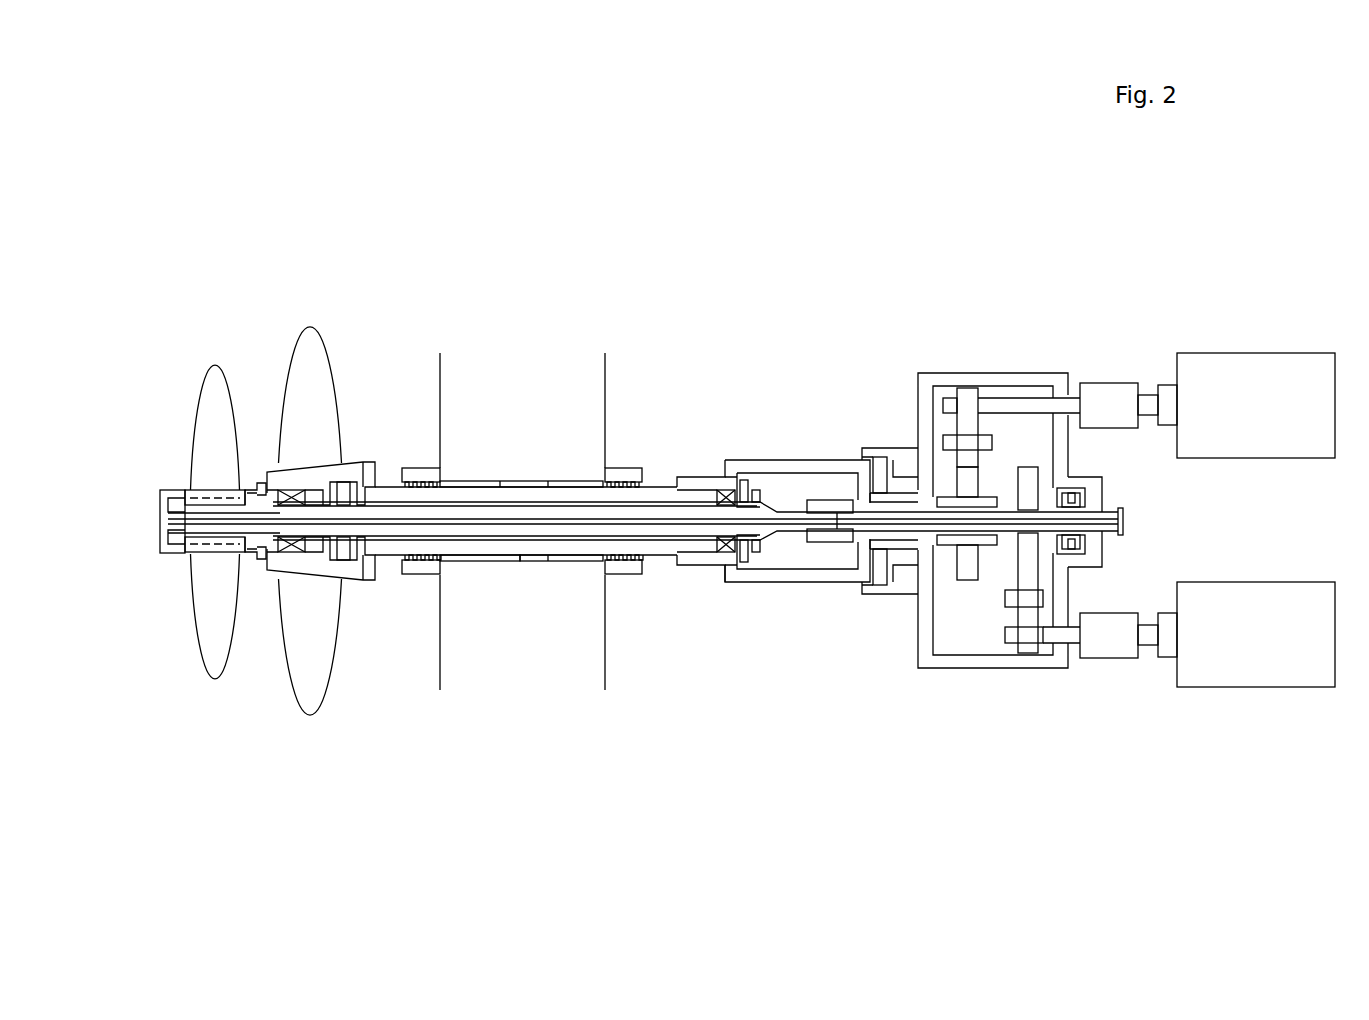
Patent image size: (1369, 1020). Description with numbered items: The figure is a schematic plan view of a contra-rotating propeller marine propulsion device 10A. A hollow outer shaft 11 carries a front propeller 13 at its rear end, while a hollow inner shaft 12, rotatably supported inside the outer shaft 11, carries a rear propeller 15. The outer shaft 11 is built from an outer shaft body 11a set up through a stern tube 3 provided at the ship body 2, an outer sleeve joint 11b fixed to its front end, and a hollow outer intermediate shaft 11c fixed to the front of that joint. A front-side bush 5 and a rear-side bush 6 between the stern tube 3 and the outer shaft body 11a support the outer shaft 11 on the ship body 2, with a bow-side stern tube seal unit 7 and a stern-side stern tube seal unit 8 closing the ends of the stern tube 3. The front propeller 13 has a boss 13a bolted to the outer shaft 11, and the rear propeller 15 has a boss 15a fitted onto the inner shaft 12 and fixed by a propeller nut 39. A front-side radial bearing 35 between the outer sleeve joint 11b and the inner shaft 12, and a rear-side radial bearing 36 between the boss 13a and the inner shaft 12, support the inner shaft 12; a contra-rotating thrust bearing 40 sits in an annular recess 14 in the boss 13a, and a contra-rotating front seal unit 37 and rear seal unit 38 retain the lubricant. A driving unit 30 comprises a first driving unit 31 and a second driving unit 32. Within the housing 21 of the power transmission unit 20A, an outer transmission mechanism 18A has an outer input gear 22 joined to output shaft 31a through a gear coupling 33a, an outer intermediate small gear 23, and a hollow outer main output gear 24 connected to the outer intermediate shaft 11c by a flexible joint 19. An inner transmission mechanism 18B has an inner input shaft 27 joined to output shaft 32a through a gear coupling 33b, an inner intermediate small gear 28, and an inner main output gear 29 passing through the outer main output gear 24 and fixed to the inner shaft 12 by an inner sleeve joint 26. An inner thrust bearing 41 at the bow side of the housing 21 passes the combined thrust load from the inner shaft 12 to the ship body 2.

The ship body 2 is at (605, 407).
The stern tube 3 is at (530, 481).
The front-side bush 5 is at (563, 558).
The rear-side bush 6 is at (478, 558).
The bow-side stern tube seal unit 7 is at (625, 468).
The stern-side stern tube seal unit 8 is at (420, 468).
The contra-rotating propeller marine propulsion device 10A is at (690, 272).
The outer shaft 11 is at (798, 382).
The outer shaft body 11a is at (657, 495).
The outer sleeve joint 11b is at (700, 480).
The outer intermediate shaft 11c is at (755, 460).
The inner shaft 12 is at (645, 525).
The front propeller 13 is at (327, 340).
The boss 13a is at (347, 463).
The annular recess 14 is at (362, 553).
The rear propeller 15 is at (207, 365).
The boss 15a is at (190, 488).
The outer transmission mechanism 18A is at (934, 414).
The inner transmission mechanism 18B is at (978, 614).
The flexible joint 19 is at (908, 472).
The power transmission unit 20A is at (962, 363).
The housing 21 is at (995, 378).
The outer input gear 22 is at (960, 397).
The outer intermediate small gear 23 is at (972, 457).
The outer main output gear 24 is at (957, 573).
The inner sleeve joint 26 is at (817, 540).
The inner input shaft 27 is at (1023, 645).
The inner intermediate small gear 28 is at (1022, 608).
The inner main output gear 29 is at (1023, 550).
The driving unit 30 is at (1245, 315).
The first driving unit 31 is at (1267, 360).
The output shaft 31a is at (1150, 397).
The second driving unit 32 is at (1268, 598).
The output shaft 32a is at (1145, 628).
The gear coupling 33a is at (1095, 390).
The gear coupling 33b is at (1095, 620).
The front-side radial bearing 35 is at (727, 557).
The rear-side radial bearing 36 is at (282, 488).
The contra-rotating front seal unit 37 is at (756, 561).
The contra-rotating rear seal unit 38 is at (252, 569).
The propeller nut 39 is at (178, 540).
The contra-rotating thrust bearing 40 is at (353, 570).
The inner thrust bearing 41 is at (1094, 497).